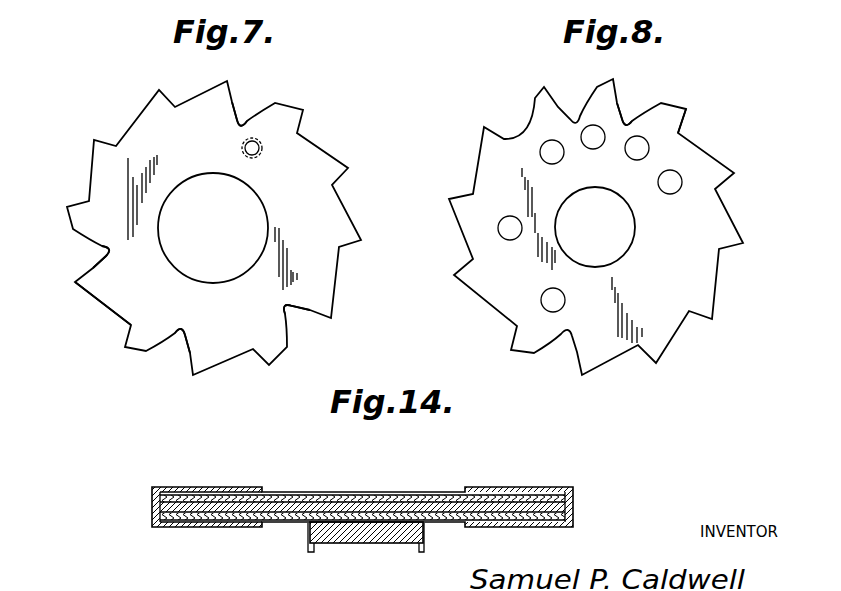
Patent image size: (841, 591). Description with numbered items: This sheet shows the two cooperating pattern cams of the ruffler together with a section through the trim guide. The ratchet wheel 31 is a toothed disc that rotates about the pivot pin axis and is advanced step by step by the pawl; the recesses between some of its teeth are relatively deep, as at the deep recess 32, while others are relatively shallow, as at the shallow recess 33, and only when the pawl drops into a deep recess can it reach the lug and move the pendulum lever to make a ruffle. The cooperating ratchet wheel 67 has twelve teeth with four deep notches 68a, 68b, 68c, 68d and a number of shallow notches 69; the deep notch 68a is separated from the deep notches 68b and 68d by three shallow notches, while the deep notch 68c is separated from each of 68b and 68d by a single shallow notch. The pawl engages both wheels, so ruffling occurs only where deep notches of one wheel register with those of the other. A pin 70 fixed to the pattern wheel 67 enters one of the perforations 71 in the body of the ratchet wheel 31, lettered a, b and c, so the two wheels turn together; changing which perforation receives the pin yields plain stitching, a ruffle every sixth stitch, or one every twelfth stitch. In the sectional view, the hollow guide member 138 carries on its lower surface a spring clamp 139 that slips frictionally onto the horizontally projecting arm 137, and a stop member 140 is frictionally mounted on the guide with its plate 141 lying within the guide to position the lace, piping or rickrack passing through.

In FIG. 7, the ratchet wheel 67 is at (310, 168).
In FIG. 7, the deep notch 68a is at (247, 122).
In FIG. 7, the deep notch 68b is at (107, 250).
In FIG. 7, the deep notch 68c is at (177, 340).
In FIG. 7, the deep notch 68d is at (300, 327).
In FIG. 7, the shallow notch 69 is at (108, 315).
In FIG. 7, the pin 70 is at (254, 155).
In FIG. 8, the ratchet wheel 31 is at (678, 258).
In FIG. 8, the deep recess 32 is at (622, 118).
In FIG. 8, the shallow recess 33 is at (678, 125).
In FIG. 8, the perforations 71 is at (670, 194).
In FIG. 14, the horizontally projecting arm 137 is at (357, 533).
In FIG. 14, the hollow guide member 138 is at (383, 493).
In FIG. 14, the spring clamp 139 is at (311, 536).
In FIG. 14, the stop member 140 is at (535, 488).
In FIG. 14, the plate 141 is at (223, 510).